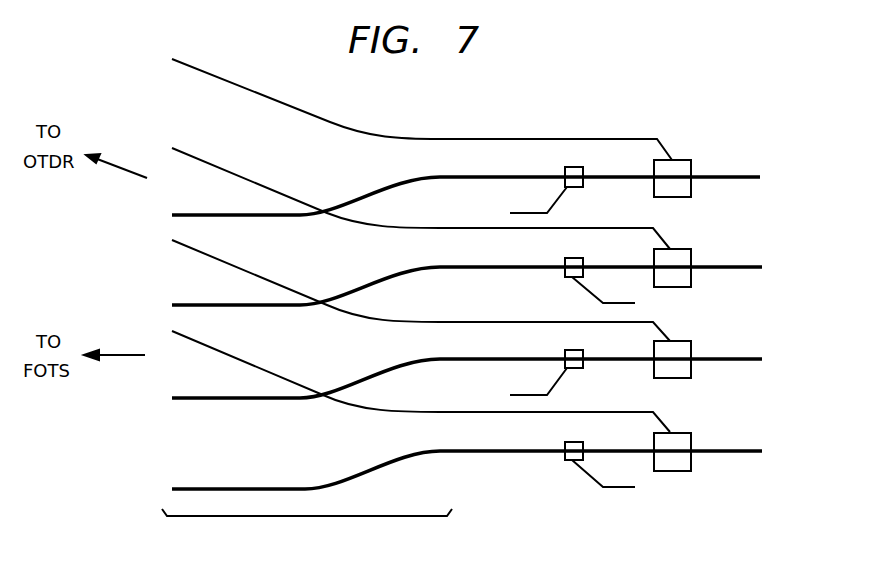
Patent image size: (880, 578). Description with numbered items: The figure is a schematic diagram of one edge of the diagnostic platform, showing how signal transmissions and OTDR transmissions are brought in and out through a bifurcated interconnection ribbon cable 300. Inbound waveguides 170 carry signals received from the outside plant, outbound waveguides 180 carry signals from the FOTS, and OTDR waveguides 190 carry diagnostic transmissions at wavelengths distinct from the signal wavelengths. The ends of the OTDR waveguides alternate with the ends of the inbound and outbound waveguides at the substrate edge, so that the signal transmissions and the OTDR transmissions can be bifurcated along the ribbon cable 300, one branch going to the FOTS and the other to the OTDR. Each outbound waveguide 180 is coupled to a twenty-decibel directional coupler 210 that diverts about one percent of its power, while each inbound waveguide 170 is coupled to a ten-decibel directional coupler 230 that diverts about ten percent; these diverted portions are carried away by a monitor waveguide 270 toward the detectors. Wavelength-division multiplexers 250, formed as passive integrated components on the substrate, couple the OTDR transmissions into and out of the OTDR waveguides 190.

The waveguides carrying inbound signals 170 is at (758, 177).
The waveguides carrying outbound signals 180 is at (760, 268).
The waveguides carrying diagnostic transmissions 190 is at (505, 139).
The 20-dB directional coupler 210 is at (565, 258).
The 10-dB directional coupler 230 is at (565, 168).
The wavelength-division multiplexer 250 is at (688, 160).
The monitor waveguide 270 is at (617, 487).
The interconnection ribbon cable 300 is at (303, 516).